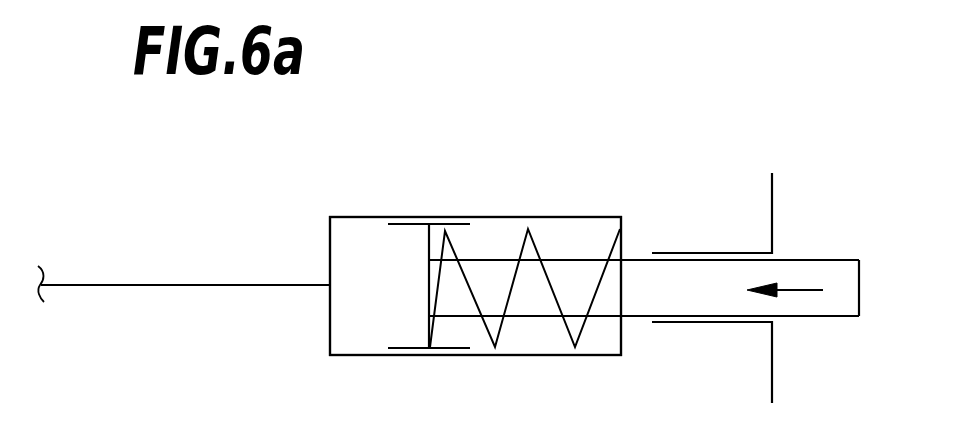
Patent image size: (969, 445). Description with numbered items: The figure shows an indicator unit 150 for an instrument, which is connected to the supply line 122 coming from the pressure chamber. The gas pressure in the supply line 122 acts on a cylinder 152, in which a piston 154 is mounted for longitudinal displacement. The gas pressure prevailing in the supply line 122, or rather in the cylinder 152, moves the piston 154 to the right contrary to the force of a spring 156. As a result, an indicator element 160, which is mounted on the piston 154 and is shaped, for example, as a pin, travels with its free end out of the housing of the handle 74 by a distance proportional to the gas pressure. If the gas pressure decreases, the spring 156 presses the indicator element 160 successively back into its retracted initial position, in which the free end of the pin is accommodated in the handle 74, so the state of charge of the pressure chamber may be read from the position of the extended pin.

The indicator unit 150 is at (548, 196).
The supply line 122 is at (206, 284).
The cylinder 152 is at (367, 217).
The piston 154 is at (435, 222).
The spring 156 is at (522, 240).
The indicator element 160 is at (839, 272).
The handle 74 is at (763, 368).